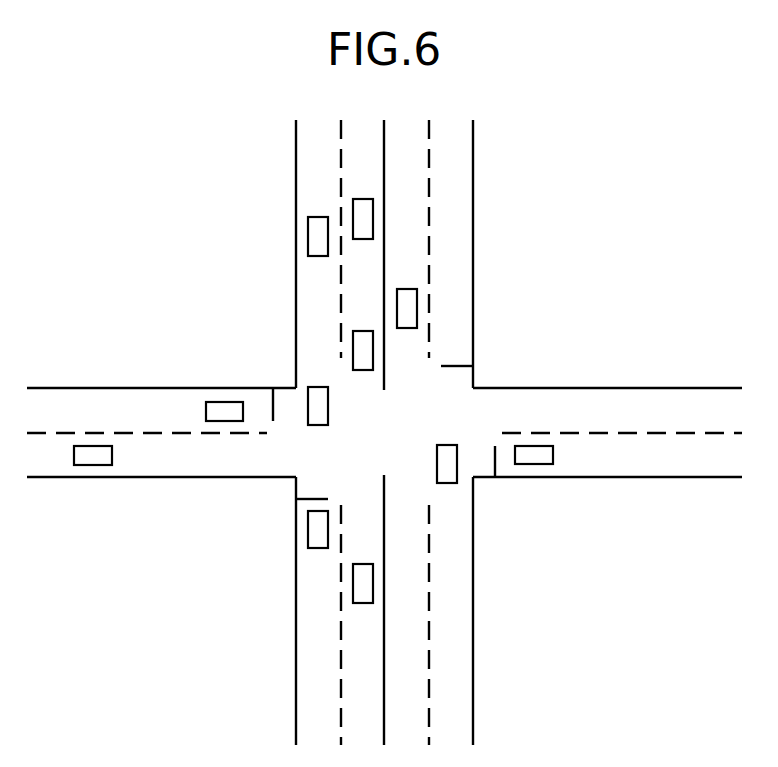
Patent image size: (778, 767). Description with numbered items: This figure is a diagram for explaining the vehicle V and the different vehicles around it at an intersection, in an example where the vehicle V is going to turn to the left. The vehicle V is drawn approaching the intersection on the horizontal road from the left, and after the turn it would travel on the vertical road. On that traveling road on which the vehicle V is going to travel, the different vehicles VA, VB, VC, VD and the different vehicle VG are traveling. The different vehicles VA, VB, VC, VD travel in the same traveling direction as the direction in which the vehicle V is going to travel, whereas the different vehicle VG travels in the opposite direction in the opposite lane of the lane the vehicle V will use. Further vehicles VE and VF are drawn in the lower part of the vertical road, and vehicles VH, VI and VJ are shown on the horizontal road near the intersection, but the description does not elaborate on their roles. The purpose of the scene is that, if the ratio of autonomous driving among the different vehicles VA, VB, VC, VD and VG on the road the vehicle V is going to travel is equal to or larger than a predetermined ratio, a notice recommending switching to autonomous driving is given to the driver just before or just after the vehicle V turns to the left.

The vehicle V is at (226, 402).
The different vehicle VA is at (374, 219).
The different vehicle VB is at (311, 217).
The different vehicle VC is at (313, 387).
The different vehicle VD is at (355, 333).
The vehicle VE is at (308, 528).
The vehicle VF is at (353, 580).
The different vehicle VG is at (418, 308).
The vehicle VH is at (458, 481).
The vehicle VI is at (533, 464).
The vehicle VJ is at (93, 465).